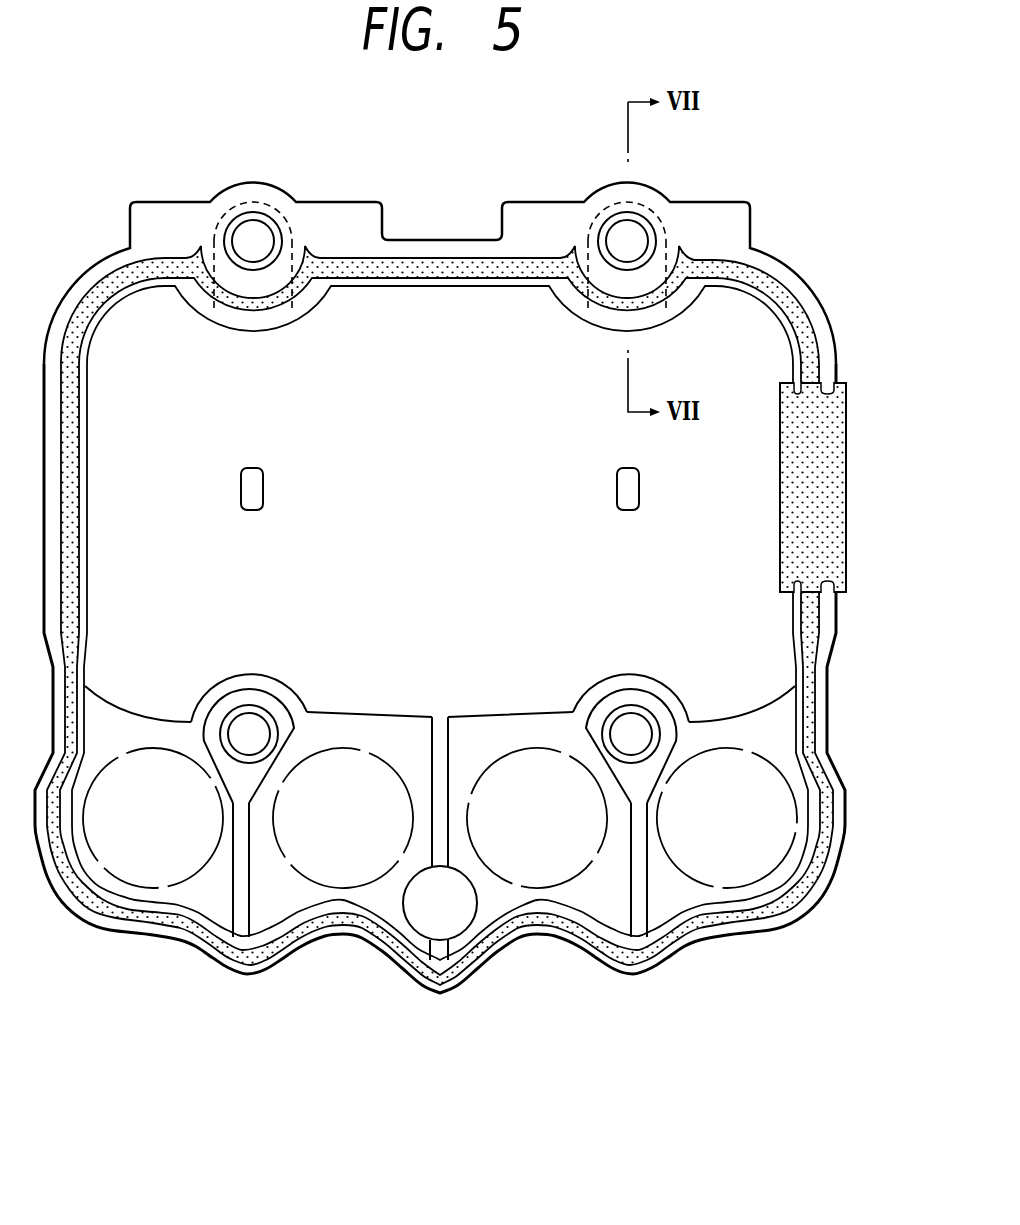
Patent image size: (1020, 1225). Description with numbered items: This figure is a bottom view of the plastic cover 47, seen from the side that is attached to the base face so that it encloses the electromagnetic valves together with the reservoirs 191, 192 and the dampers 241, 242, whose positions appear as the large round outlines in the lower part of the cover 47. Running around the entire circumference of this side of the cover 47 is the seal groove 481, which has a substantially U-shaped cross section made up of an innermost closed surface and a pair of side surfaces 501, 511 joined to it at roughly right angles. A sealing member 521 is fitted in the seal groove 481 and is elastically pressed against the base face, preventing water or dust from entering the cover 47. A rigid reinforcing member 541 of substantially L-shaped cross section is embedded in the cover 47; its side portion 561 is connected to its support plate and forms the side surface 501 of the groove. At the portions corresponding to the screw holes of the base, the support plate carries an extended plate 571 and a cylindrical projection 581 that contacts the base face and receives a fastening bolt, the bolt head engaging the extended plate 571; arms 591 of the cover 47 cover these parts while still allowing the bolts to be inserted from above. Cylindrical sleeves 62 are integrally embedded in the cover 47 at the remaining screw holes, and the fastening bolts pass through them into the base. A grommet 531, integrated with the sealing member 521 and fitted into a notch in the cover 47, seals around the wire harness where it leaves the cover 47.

The cover 47 is at (820, 307).
The seal groove 481 is at (422, 965).
The side surface 501 is at (815, 840).
The side surface 511 is at (753, 918).
The sealing member 521 is at (625, 958).
The grommet 531 is at (781, 522).
The reinforcing member 541 is at (546, 895).
The side portion 561 is at (622, 933).
The extended plate 571 is at (297, 238).
The cylindrical projection 581 is at (617, 218).
The arm 591 is at (148, 212).
The cylindrical sleeve 62 is at (244, 713).
The reservoir 191 is at (137, 740).
The reservoir 192 is at (722, 742).
The damper 241 is at (348, 742).
The damper 242 is at (520, 742).